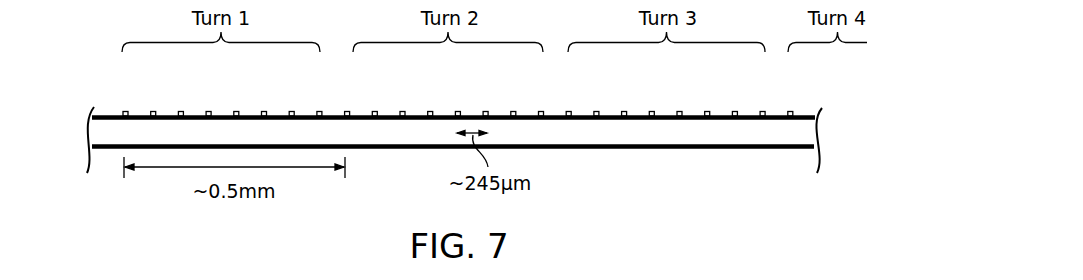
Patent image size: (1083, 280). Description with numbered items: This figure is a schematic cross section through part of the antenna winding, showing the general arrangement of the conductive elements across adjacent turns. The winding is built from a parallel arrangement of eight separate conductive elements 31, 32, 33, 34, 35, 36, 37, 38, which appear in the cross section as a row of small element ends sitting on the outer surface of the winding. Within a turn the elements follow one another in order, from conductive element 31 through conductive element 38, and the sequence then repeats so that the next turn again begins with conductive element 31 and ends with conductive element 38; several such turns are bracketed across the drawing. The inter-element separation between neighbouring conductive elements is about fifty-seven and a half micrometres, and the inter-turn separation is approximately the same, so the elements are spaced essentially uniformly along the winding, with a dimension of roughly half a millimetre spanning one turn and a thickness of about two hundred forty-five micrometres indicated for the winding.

The conductive element 31 is at (126, 112).
The conductive element 32 is at (153, 112).
The conductive element 33 is at (181, 112).
The conductive element 34 is at (209, 112).
The conductive element 35 is at (236, 112).
The conductive element 36 is at (264, 112).
The conductive element 37 is at (292, 112).
The conductive element 38 is at (319, 112).